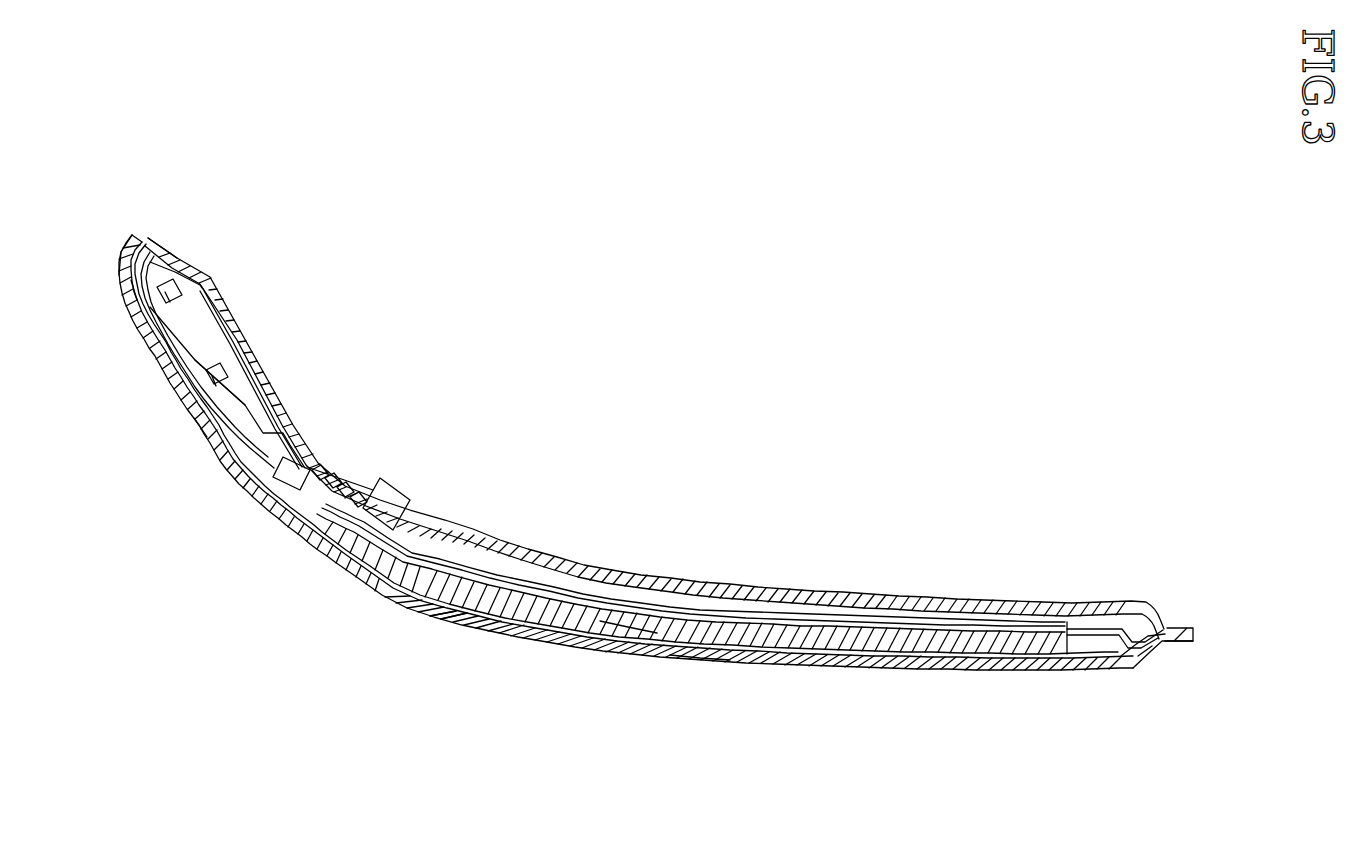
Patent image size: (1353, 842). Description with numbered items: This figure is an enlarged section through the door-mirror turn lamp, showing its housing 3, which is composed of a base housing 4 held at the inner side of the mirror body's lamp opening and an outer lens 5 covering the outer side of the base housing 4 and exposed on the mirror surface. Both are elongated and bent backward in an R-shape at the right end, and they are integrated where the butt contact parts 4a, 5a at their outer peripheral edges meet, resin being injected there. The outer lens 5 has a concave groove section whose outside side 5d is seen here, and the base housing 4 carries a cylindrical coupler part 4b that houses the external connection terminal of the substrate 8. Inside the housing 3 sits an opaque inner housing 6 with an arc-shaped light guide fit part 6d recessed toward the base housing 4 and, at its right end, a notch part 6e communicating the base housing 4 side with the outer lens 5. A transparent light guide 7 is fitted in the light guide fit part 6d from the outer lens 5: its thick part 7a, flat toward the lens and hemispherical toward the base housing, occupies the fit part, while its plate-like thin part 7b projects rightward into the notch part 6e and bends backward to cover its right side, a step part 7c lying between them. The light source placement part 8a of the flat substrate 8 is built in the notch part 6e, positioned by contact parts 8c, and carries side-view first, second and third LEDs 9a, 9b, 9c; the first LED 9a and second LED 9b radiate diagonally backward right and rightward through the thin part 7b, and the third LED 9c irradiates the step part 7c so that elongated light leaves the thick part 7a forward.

The housing 3 is at (1097, 594).
The base housing 4 is at (862, 590).
The butt contact part 4a is at (134, 236).
The coupler part 4b is at (417, 500).
The outer lens 5 is at (587, 648).
The butt contact part 5a is at (125, 252).
The outside side 5d is at (462, 626).
The inner housing 6 is at (556, 582).
The light guide fit part 6d is at (628, 612).
The notch part 6e is at (160, 350).
The light guide 7 is at (840, 658).
The thick part 7a is at (700, 652).
The thin part 7b is at (182, 365).
The step part 7c is at (290, 490).
The substrate 8 is at (271, 434).
The light source placement part 8a is at (248, 403).
The contact part 8c is at (130, 300).
The first LED 9a is at (184, 283).
The second LED 9b is at (243, 398).
The third LED 9c is at (338, 440).